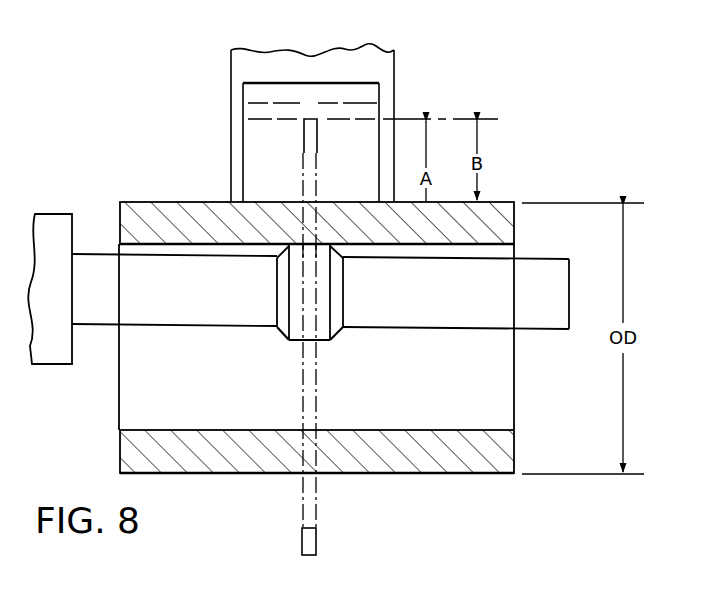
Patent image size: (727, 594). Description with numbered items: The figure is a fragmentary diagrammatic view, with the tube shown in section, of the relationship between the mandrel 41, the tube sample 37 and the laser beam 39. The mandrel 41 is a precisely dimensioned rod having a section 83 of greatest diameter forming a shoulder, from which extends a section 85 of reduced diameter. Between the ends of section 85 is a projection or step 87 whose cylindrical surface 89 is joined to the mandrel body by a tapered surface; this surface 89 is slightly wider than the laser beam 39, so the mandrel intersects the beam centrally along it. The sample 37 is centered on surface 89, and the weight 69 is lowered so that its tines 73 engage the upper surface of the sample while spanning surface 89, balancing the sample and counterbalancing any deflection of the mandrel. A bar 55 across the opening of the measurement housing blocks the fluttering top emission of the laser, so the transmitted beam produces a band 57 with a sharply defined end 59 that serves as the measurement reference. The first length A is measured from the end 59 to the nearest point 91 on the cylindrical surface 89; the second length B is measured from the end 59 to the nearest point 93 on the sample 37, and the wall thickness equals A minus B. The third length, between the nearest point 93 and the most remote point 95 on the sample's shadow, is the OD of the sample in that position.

The sample 37 is at (159, 188).
The laser beam 39 is at (320, 533).
The mandrel 41 is at (532, 341).
The bar 55 is at (268, 112).
The band 57 is at (313, 134).
The end 59 is at (312, 118).
The weight 69 is at (377, 63).
The tines 73 is at (381, 182).
The section 83 is at (53, 348).
The section 85 is at (160, 315).
The projection 87 is at (333, 338).
The cylindrical surface 89 is at (298, 341).
The nearest point 91 is at (312, 244).
The nearest point 93 is at (308, 201).
The most remote point 95 is at (306, 473).